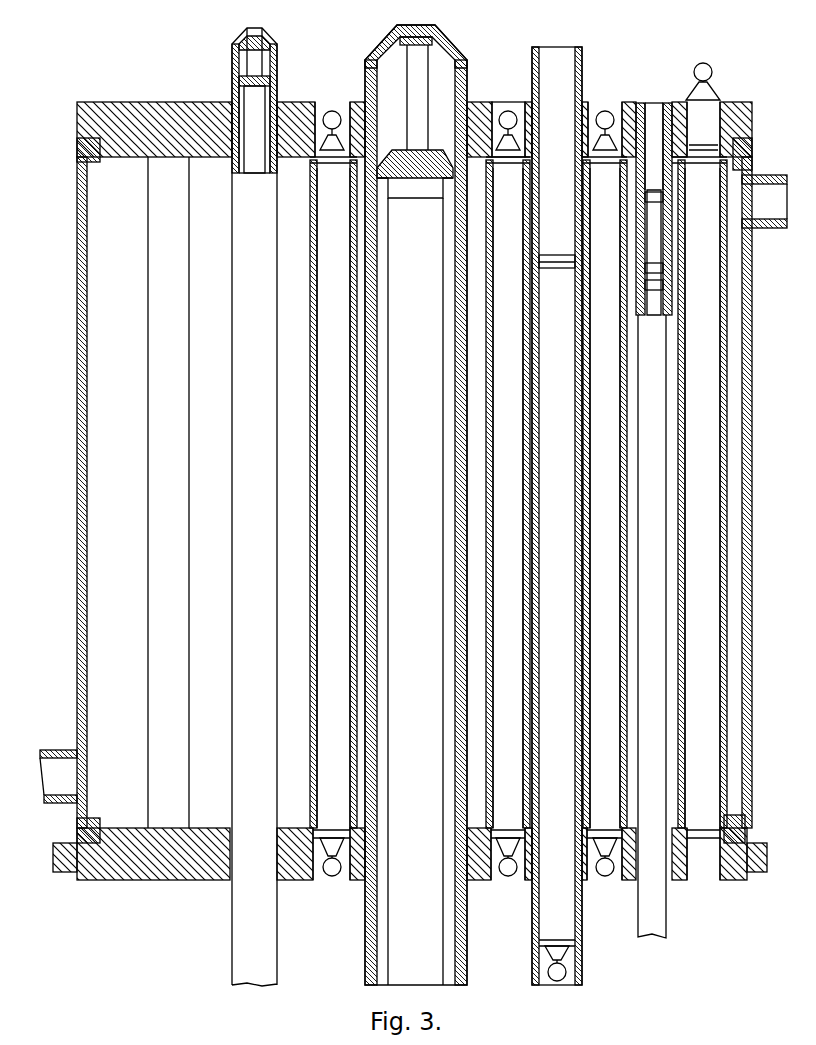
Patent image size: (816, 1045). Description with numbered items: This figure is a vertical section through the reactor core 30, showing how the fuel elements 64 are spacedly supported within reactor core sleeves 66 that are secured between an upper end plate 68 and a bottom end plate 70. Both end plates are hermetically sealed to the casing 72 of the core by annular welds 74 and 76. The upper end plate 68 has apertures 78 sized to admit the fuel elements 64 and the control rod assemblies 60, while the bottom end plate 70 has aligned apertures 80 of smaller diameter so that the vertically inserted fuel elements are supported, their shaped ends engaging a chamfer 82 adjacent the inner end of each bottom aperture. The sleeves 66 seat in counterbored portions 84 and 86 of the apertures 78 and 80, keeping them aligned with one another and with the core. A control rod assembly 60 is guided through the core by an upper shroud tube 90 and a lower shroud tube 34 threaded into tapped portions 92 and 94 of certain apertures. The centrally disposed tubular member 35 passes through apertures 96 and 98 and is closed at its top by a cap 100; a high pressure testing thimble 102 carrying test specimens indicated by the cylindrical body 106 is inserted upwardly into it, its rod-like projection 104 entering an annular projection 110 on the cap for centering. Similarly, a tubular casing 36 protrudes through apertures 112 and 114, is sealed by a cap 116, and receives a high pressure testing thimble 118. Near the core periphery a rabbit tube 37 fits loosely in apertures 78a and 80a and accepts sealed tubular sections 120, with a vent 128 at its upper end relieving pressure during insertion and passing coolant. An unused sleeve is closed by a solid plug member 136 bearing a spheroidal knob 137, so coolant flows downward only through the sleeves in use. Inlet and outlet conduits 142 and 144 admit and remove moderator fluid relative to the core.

The reactor core 30 is at (778, 97).
The lower shroud tube 34 is at (534, 944).
The tubular member 35 is at (468, 78).
The tubular casing 36 is at (278, 58).
The rabbit tube 37 is at (660, 906).
The control rod assembly 60 is at (552, 50).
The fuel element 64 is at (343, 353).
The reactor core sleeve 66 is at (310, 733).
The upper end plate 68 is at (136, 104).
The bottom end plate 70 is at (120, 881).
The casing 72 is at (78, 612).
The annular weld 74 is at (80, 140).
The annular weld 76 is at (80, 838).
The aperture 78 is at (498, 114).
The aperture 78a is at (638, 103).
The aperture 80 is at (338, 880).
The aperture 80a is at (636, 882).
The chamfer 82 is at (320, 840).
The counterbored portion 84 is at (310, 162).
The counterbored portion 86 is at (310, 830).
The upper shroud tube 90 is at (582, 68).
The tapped portion 92 is at (588, 120).
The tapped portion 94 is at (525, 884).
The aperture 96 is at (470, 118).
The aperture 98 is at (356, 885).
The cap 100 is at (392, 34).
The high pressure testing thimble 102 is at (424, 160).
The rod-like projection 104 is at (407, 96).
The cylindrical body 106 is at (430, 383).
The annular projection 110 is at (436, 48).
The aperture 112 is at (288, 108).
The aperture 114 is at (220, 878).
The cap 116 is at (240, 33).
The high pressure testing thimble 118 is at (266, 80).
The sealed tubular section 120 is at (662, 238).
The vent 128 is at (663, 104).
The plug member 136 is at (712, 88).
The spheroidal knob 137 is at (702, 70).
The inlet conduit 142 is at (66, 750).
The outlet conduit 144 is at (752, 176).